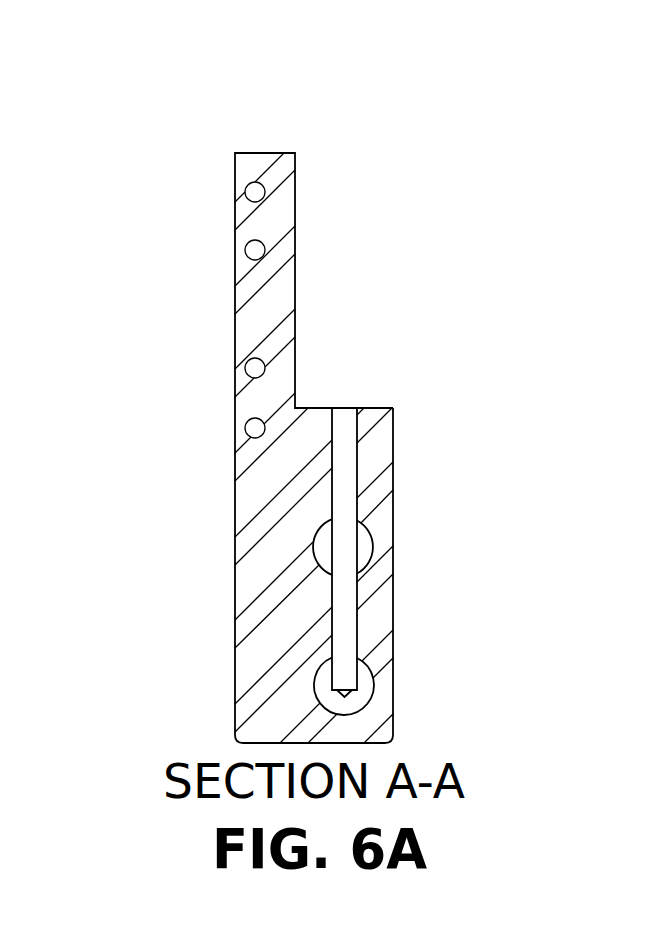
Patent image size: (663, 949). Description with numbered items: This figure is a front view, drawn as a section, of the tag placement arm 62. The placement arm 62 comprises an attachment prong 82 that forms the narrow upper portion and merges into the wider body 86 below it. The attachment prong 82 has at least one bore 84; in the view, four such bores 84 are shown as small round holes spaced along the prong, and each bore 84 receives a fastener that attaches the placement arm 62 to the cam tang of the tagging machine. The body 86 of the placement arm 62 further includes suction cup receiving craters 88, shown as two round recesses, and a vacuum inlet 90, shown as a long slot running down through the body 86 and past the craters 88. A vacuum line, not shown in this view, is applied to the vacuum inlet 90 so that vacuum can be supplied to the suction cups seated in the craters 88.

The placement arm 62 is at (255, 152).
The attachment prong 82 is at (247, 335).
The bore 84 is at (255, 252).
The body 86 is at (247, 590).
The suction cup receiving crater 88 is at (365, 543).
The vacuum inlet 90 is at (345, 415).